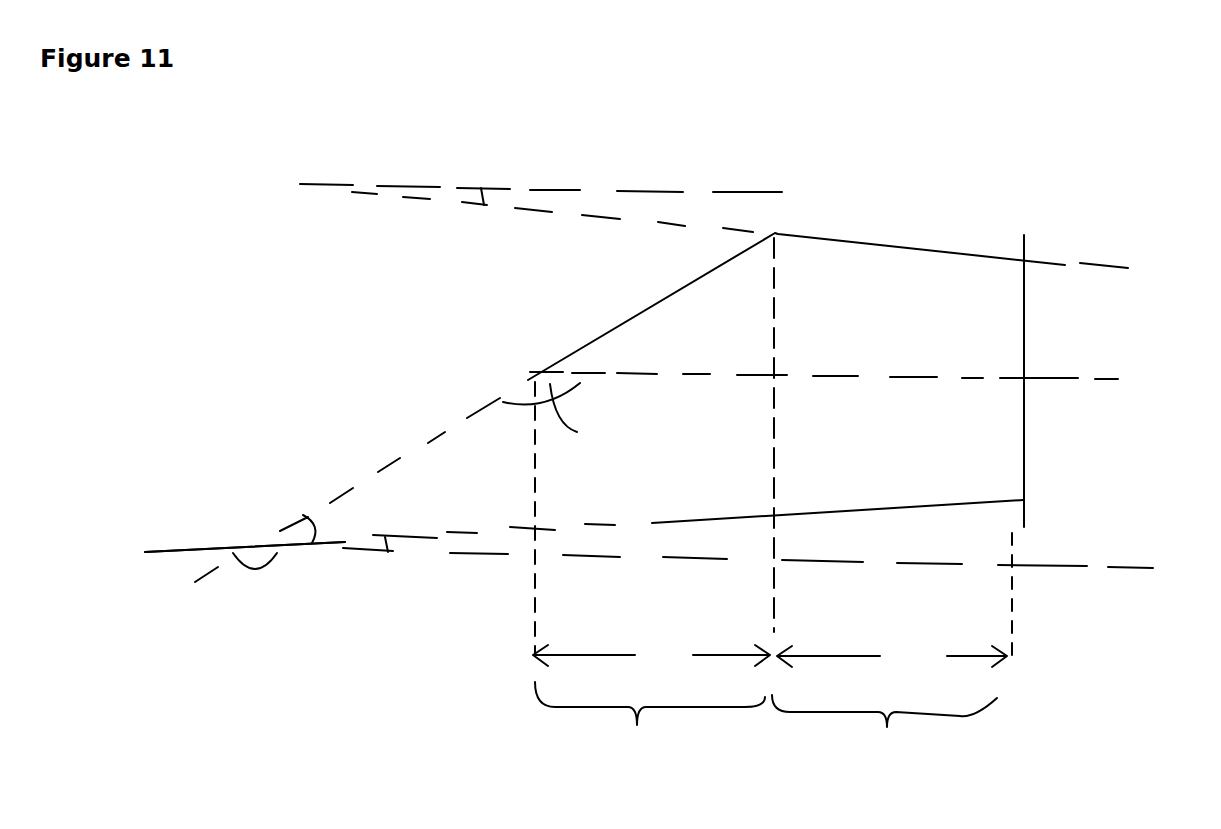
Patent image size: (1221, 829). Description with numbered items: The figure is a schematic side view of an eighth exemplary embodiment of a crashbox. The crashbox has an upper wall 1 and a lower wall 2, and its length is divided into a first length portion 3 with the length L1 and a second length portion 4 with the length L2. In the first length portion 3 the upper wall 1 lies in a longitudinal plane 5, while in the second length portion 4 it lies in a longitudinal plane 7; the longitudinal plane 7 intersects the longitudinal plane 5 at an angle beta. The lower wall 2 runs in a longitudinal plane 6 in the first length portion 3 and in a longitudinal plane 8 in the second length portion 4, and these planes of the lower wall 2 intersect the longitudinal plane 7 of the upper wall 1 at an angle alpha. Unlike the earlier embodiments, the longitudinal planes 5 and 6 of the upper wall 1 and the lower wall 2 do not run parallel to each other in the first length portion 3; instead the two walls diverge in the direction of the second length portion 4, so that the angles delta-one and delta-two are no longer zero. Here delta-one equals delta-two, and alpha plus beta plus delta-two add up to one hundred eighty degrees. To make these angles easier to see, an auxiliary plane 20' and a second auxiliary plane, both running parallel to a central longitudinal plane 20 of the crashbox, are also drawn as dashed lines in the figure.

The upper wall 1 is at (558, 291).
The lower wall 2 is at (895, 478).
The first length portion 3 is at (884, 730).
The second length portion 4 is at (650, 725).
The longitudinal plane 5 is at (1140, 215).
The longitudinal plane 6 is at (157, 547).
The longitudinal plane 7 is at (200, 580).
The longitudinal plane 8 is at (245, 547).
The central longitudinal plane 20 is at (858, 358).
The auxiliary plane 20' is at (777, 533).
The length L1 is at (892, 658).
The length L2 is at (651, 658).